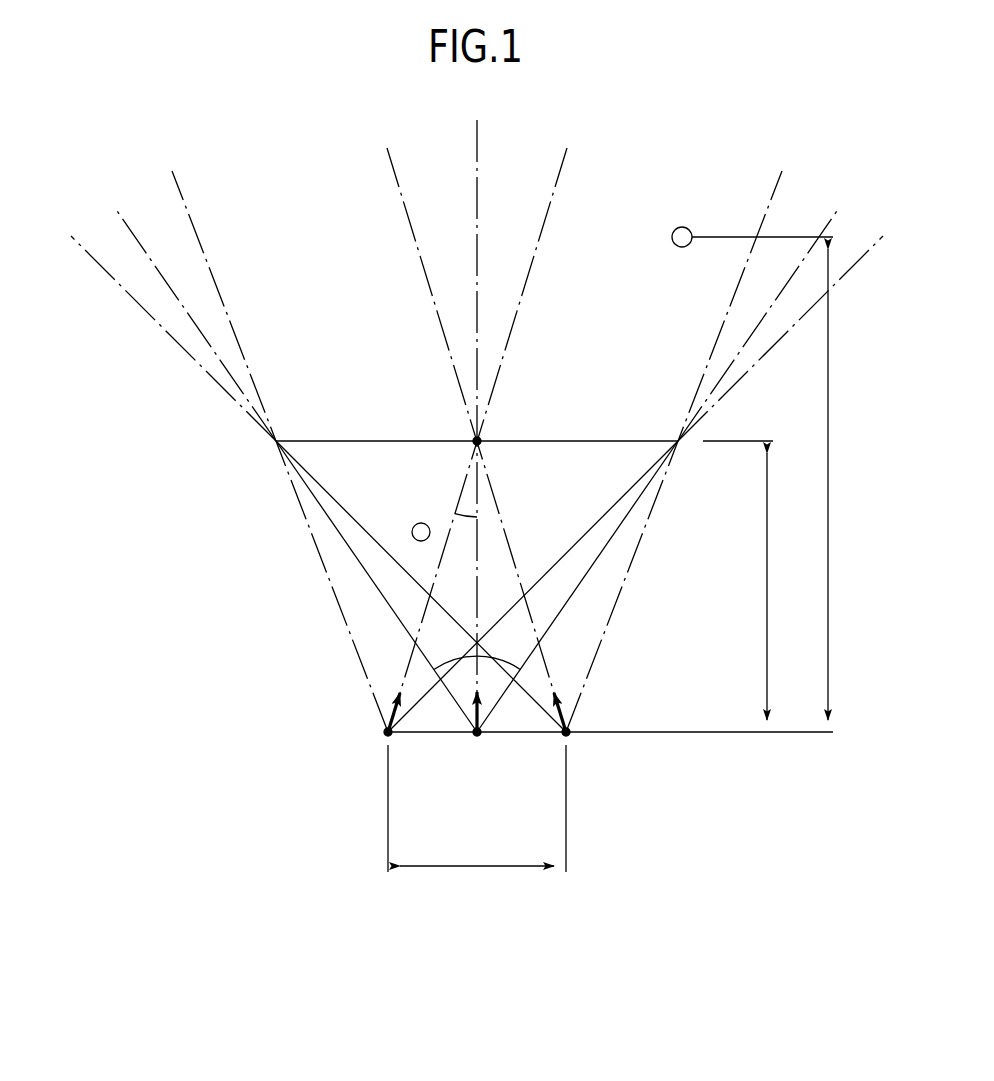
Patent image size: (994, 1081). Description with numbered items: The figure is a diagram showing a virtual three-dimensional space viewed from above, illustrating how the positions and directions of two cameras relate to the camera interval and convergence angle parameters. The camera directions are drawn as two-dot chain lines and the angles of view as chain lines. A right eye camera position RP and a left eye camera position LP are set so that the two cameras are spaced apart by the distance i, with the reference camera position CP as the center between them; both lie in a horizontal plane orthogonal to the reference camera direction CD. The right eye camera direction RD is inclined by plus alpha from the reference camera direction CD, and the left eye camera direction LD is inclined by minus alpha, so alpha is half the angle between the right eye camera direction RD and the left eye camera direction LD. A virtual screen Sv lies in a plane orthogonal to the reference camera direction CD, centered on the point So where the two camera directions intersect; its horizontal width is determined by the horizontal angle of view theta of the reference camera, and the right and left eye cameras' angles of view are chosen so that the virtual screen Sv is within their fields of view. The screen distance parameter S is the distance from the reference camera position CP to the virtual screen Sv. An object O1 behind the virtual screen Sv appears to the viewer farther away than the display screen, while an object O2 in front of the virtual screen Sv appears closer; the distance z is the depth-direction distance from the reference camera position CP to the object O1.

The object O1 is at (684, 226).
The object O2 is at (415, 524).
The point So is at (469, 435).
The virtual screen Sv is at (607, 440).
The left eye camera direction LD is at (393, 708).
The reference camera direction CD is at (481, 705).
The right eye camera direction RD is at (561, 708).
The left eye camera position LP is at (386, 736).
The reference camera position CP is at (476, 736).
The right eye camera position RP is at (568, 736).
The screen distance parameter S is at (747, 580).
The distance z is at (840, 484).
The camera interval parameter i is at (477, 822).